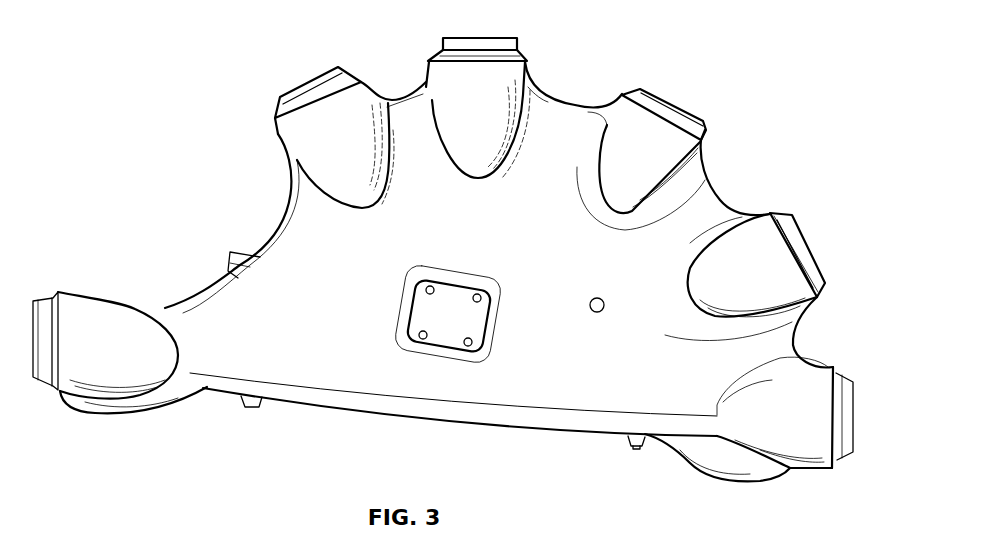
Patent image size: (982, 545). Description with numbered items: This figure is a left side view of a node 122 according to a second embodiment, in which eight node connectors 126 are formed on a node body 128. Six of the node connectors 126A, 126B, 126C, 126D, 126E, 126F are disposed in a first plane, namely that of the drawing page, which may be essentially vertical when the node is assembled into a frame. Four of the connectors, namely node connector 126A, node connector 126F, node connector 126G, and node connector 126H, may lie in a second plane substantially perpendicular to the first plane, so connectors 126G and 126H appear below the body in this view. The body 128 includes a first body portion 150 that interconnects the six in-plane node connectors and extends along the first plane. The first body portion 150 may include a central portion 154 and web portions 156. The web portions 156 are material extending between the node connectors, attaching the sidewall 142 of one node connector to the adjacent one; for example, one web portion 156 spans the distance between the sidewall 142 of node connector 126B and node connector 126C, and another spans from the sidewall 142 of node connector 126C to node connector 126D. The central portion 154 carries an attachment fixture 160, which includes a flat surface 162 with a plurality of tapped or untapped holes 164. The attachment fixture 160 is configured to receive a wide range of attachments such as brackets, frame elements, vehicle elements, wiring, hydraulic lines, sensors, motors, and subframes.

The node 122 is at (238, 123).
The node connectors 126 is at (701, 85).
The node connector 126A is at (81, 293).
The node connector 126B is at (279, 137).
The node connector 126C is at (528, 62).
The node connector 126D is at (620, 92).
The node connector 126E is at (752, 216).
The node connector 126F is at (821, 366).
The node connector 126G is at (712, 469).
The node connector 126H is at (134, 414).
The node body 128 is at (511, 402).
The sidewall 142 is at (368, 80).
The first body portion 150 is at (338, 357).
The central portion 154 is at (503, 323).
The web portions 156 is at (423, 174).
The attachment fixture 160 is at (441, 343).
The flat surface 162 is at (427, 317).
The holes 164 is at (481, 296).